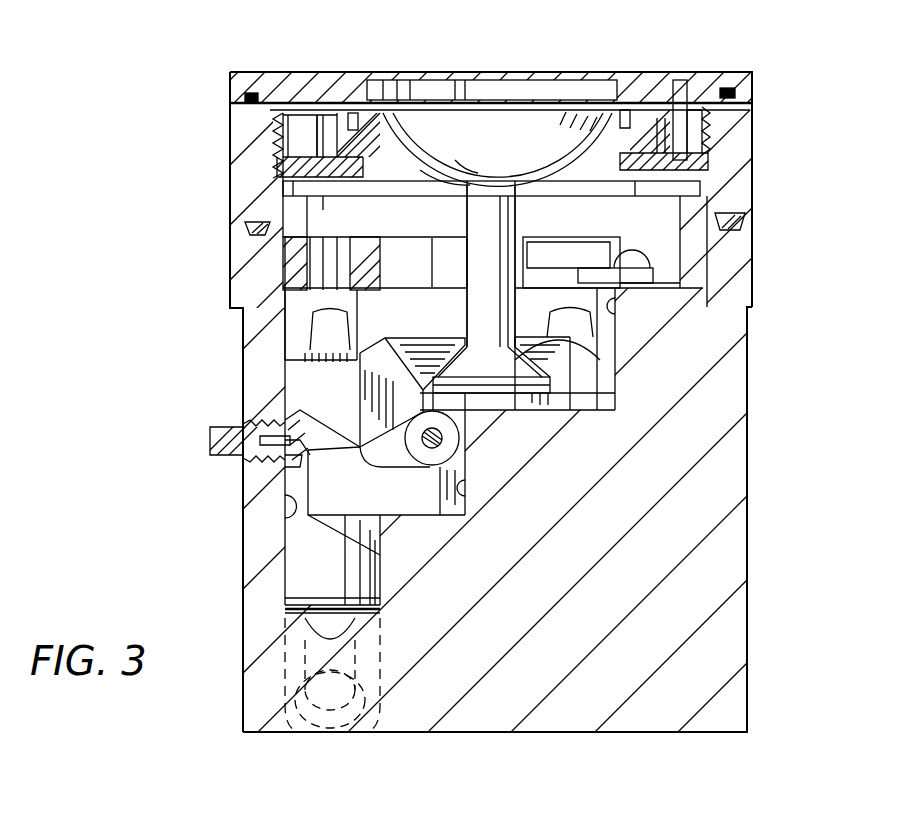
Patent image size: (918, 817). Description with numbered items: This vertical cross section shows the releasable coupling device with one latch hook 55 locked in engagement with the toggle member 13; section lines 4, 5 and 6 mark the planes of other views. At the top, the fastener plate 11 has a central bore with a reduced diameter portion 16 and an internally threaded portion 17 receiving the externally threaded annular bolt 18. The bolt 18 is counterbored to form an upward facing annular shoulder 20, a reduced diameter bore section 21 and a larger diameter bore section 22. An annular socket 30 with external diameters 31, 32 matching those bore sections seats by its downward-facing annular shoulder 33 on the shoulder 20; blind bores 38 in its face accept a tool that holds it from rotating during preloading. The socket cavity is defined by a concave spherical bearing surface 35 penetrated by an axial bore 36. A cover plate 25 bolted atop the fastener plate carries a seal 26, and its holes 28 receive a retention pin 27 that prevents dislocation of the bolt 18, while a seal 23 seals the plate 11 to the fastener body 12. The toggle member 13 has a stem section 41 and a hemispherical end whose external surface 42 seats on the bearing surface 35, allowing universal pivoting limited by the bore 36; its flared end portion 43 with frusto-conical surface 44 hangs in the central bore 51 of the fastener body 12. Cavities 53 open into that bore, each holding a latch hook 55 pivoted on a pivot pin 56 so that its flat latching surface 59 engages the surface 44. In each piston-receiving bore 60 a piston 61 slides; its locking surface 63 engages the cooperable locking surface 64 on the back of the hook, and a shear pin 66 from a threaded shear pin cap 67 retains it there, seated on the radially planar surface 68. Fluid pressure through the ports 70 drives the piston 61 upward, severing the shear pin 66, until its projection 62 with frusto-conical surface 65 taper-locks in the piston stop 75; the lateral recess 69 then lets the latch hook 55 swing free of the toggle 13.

The section line 4- 4 is at (195, 292).
The section line 5- 5 is at (330, 30).
The section line 6- 6 is at (195, 437).
The fastener plate 11 is at (752, 186).
The fastener body 12 is at (740, 642).
The toggle member 13 is at (518, 215).
The reduced diameter portion 16 is at (300, 222).
The internally threaded portion 17 is at (278, 130).
The annular bolt 18 is at (692, 160).
The annular shoulder 20 is at (363, 145).
The reduced diameter bore section 21 is at (357, 135).
The larger diameter bore section 22 is at (655, 122).
The seal 23 is at (745, 222).
The cover plate 25 is at (752, 72).
The seal 26 is at (245, 98).
The retention pin 27 is at (663, 140).
The holes 28 is at (735, 95).
The annular socket 30 is at (337, 113).
The external diameter 31 is at (618, 162).
The external diameter 32 is at (700, 112).
The annular shoulder 33 is at (283, 186).
The spherical bearing surface 35 is at (583, 120).
The axial bore 36 is at (400, 172).
The blind bores 38 is at (352, 113).
The stem section 41 is at (501, 272).
The external surface 42 is at (553, 147).
The flared end portion 43 is at (527, 393).
The frusto-conical surface 44 is at (530, 362).
The central bore 51 is at (620, 312).
The cavities 53 is at (467, 493).
The latch hook 55 is at (433, 332).
The pivot pin 56 is at (443, 438).
The latching surface 59 is at (457, 365).
The piston-receiving bore 60 is at (288, 568).
The piston 61 is at (282, 543).
The projection 62 is at (322, 326).
The locking surface 63 is at (360, 388).
The locking surface 64 is at (357, 362).
The frusto-conical surface 65 is at (383, 252).
The shear pin 66 is at (302, 460).
The shear pin cap 67 is at (222, 427).
The radially planar surface 68 is at (373, 615).
The lateral recess 69 is at (288, 515).
The fluid pressure receiving port 70 is at (302, 735).
The piston stop 75 is at (283, 262).